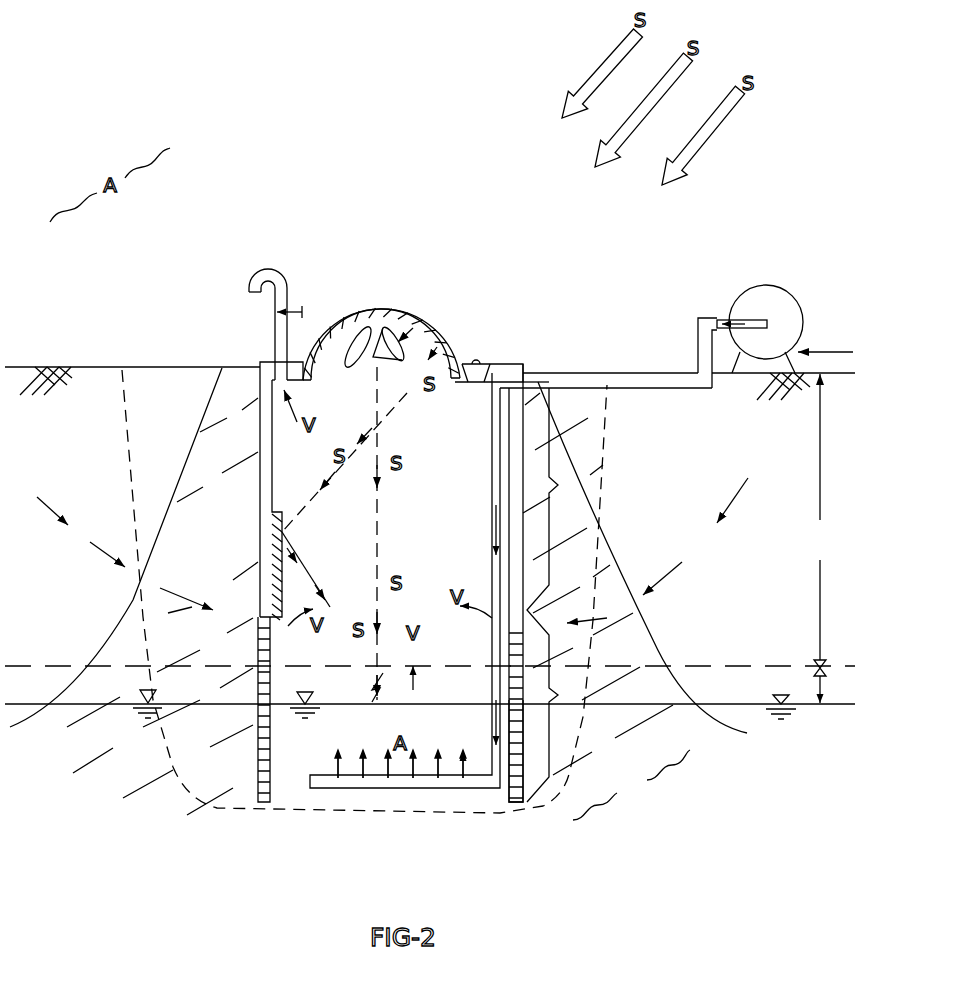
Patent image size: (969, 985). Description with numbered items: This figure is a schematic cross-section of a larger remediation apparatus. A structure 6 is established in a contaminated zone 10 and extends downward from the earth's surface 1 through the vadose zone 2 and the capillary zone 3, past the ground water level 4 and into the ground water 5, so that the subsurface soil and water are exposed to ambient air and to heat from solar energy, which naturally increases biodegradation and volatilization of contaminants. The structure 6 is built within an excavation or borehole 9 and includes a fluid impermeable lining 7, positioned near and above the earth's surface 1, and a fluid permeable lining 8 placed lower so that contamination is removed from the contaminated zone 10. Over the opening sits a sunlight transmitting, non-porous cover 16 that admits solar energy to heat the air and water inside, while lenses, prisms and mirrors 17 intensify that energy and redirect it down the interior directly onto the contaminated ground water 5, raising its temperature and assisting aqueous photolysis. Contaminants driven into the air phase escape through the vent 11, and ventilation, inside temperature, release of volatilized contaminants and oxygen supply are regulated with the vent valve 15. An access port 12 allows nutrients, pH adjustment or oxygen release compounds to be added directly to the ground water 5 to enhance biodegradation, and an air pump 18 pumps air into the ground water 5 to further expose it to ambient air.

The earth's surface 1 is at (43, 365).
The vadose zone 2 is at (820, 517).
The capillary zone 3 is at (826, 678).
The ground water level 4 is at (306, 690).
The ground water 5 is at (631, 785).
The structure 6 is at (258, 362).
The fluid impermeable lining 7 is at (542, 583).
The fluid permeable lining 8 is at (540, 743).
The excavation or borehole 9 is at (606, 433).
The contaminated zone 10 is at (252, 512).
The vent 11 is at (258, 272).
The access port 12 is at (482, 364).
The vent valve 15 is at (305, 298).
The sunlight transmitting, non-porous cover 16 is at (423, 316).
The lenses, prisms and mirrors 17 is at (365, 338).
The air pump 18 is at (788, 288).